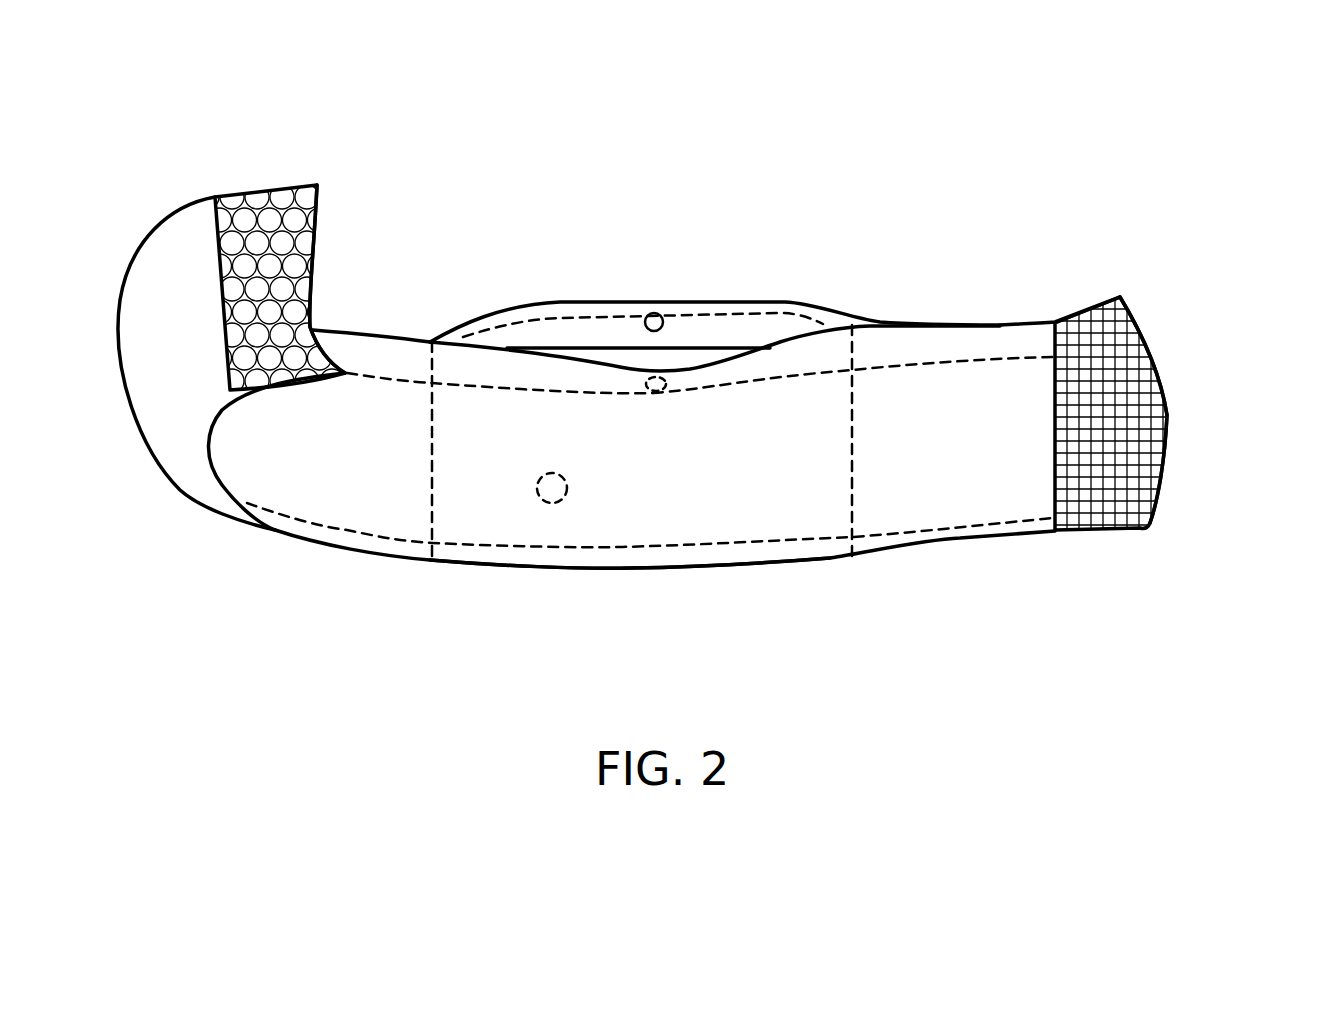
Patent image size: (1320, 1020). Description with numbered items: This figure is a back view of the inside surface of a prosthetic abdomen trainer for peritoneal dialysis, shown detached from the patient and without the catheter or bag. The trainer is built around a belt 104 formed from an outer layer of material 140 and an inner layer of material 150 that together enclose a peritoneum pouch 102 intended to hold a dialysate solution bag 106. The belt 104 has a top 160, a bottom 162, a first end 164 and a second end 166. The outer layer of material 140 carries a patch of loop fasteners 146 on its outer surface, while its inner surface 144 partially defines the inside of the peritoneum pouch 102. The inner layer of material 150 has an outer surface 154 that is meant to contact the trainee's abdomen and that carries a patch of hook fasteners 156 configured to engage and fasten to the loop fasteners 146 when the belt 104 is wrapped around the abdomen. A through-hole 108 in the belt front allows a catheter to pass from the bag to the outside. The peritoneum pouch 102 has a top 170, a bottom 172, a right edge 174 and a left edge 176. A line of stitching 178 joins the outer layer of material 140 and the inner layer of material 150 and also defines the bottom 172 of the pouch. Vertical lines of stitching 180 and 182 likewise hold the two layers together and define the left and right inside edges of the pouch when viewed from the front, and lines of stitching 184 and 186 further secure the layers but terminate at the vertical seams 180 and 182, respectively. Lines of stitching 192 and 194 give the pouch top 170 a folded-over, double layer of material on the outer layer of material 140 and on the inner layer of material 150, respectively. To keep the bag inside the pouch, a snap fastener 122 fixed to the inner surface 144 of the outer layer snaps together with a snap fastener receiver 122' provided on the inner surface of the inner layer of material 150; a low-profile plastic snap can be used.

The peritoneum pouch 102 is at (617, 345).
The belt 104 is at (353, 333).
The dialysate solution bag 106 is at (700, 357).
The through-hole 108 is at (567, 487).
The snap fastener 122 is at (659, 239).
The snap fastener receiver 122' is at (721, 411).
The outer layer of material 140 is at (178, 263).
The inner surface 144 is at (502, 307).
The patch of loop fasteners 146 is at (262, 223).
The inner layer of material 150 is at (513, 373).
The outer surface 154 is at (810, 472).
The patch of hook fasteners 156 is at (1103, 347).
The top 160 is at (907, 323).
The bottom 162 is at (642, 570).
The first end 164 is at (313, 223).
The second end 166 is at (1167, 413).
The top 170 is at (713, 360).
The bottom 172 is at (577, 550).
The right edge 174 is at (447, 464).
The left edge 176 is at (850, 457).
The line of stitching 178 is at (733, 548).
The vertical line of stitching 180 is at (853, 400).
The vertical line of stitching 182 is at (433, 403).
The line of stitching 184 is at (993, 360).
The line of stitching 186 is at (377, 373).
The line of stitching 192 is at (560, 310).
The line of stitching 194 is at (510, 387).